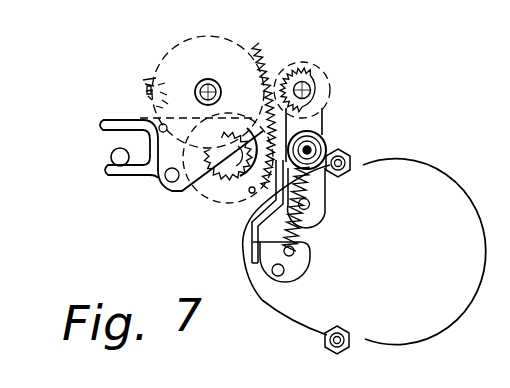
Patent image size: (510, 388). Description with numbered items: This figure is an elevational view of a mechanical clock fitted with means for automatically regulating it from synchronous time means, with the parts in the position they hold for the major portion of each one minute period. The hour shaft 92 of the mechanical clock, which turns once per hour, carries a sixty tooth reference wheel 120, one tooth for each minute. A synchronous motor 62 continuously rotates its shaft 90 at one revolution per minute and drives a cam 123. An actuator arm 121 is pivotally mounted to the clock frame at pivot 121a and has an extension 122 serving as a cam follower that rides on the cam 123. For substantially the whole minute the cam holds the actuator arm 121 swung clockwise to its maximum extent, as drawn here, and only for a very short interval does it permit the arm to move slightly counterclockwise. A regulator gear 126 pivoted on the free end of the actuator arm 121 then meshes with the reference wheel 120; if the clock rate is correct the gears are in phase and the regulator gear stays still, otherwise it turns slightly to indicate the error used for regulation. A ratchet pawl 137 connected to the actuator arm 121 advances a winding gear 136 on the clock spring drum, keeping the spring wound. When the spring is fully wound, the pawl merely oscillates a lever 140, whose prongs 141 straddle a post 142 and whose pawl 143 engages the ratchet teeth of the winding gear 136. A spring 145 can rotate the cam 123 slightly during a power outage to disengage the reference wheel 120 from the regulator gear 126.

The synchronous motor 62 is at (424, 222).
The synchronous motor shaft 90 is at (313, 257).
The hour shaft 92 is at (207, 88).
The reference wheel 120 is at (263, 64).
The actuator arm 121 is at (322, 112).
The pivot 121a is at (317, 144).
The cam follower 122 is at (252, 244).
The cam 123 is at (271, 269).
The regulator gear 126 is at (293, 70).
The winding gear 136 is at (250, 190).
The ratchet pawl 137 is at (258, 204).
The lever 140 is at (158, 126).
The prongs 141 is at (103, 123).
The post 142 is at (111, 153).
The pawl 143 is at (190, 196).
The spring 145 is at (301, 228).